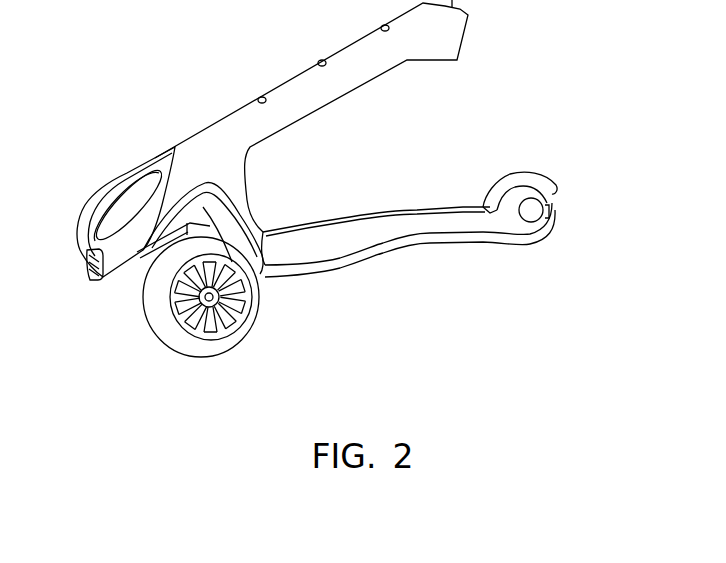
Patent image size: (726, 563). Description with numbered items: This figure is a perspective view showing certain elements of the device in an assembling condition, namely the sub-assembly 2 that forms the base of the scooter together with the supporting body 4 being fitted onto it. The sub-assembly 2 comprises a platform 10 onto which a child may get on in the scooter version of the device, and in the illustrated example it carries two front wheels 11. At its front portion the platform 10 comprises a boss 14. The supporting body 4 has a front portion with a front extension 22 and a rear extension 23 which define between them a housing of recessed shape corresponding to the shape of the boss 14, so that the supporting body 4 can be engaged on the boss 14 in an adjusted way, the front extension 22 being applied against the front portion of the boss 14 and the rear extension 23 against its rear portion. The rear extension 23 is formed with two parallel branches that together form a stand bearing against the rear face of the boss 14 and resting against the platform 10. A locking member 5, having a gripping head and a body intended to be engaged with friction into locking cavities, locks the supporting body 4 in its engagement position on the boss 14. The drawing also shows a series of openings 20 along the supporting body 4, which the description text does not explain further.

The sub-assembly 2 is at (409, 227).
The supporting body 4 is at (311, 116).
The locking member 5 is at (97, 277).
The platform 10 is at (388, 223).
The front wheels 11 is at (156, 254).
The boss 14 is at (253, 310).
The adjustment holes 20 is at (385, 28).
The front extension 22 is at (132, 195).
The rear extension 23 is at (263, 200).